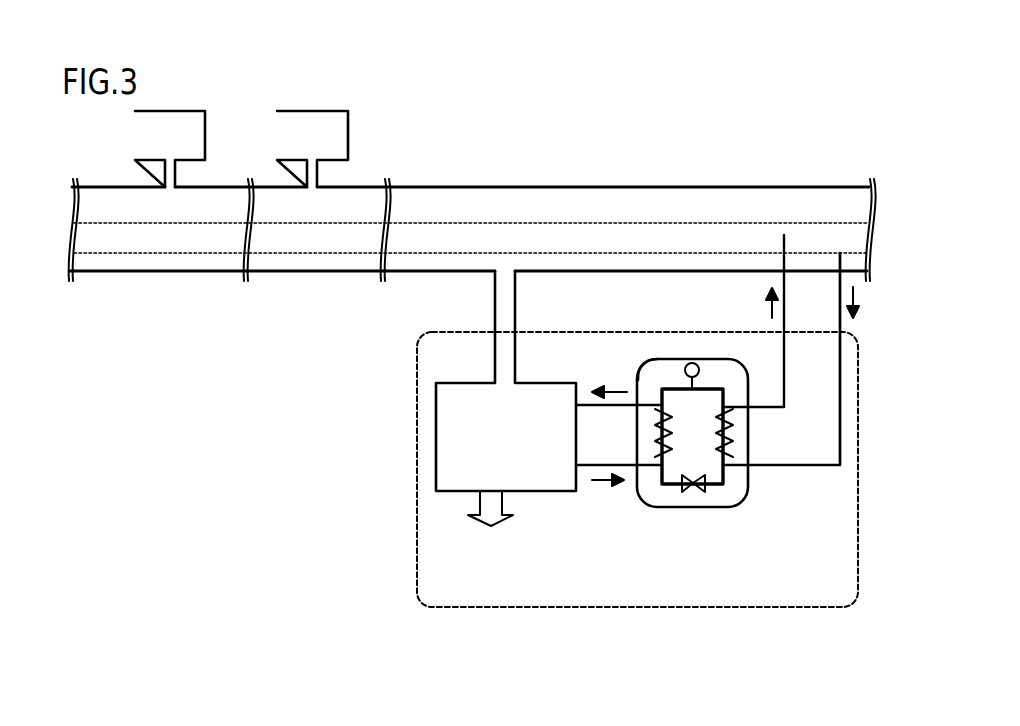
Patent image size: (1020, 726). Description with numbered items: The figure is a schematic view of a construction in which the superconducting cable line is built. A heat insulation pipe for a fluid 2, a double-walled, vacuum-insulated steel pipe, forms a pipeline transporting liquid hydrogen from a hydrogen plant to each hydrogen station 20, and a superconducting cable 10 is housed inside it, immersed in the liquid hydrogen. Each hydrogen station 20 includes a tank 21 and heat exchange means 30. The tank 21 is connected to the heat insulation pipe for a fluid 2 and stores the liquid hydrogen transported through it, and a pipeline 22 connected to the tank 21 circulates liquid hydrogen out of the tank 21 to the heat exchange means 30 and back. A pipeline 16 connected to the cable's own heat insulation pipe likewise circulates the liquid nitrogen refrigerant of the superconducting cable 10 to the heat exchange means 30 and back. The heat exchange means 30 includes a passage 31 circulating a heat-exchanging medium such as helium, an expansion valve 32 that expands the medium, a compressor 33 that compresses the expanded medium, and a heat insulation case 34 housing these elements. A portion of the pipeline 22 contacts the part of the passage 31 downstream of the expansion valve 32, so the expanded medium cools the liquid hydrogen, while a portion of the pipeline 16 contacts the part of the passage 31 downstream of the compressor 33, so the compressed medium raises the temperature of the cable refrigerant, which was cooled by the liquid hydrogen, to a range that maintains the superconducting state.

The heat insulation pipe for a fluid 2 is at (552, 187).
The superconducting cable 10 is at (463, 224).
The pipeline 16 is at (843, 373).
The hydrogen station 20 is at (135, 141).
The tank 21 is at (435, 434).
The pipeline 22 is at (590, 468).
The heat exchange means 30 is at (755, 502).
The passage 31 is at (720, 487).
The expansion valve 32 is at (683, 488).
The compressor 33 is at (687, 364).
The heat insulation case 34 is at (640, 362).